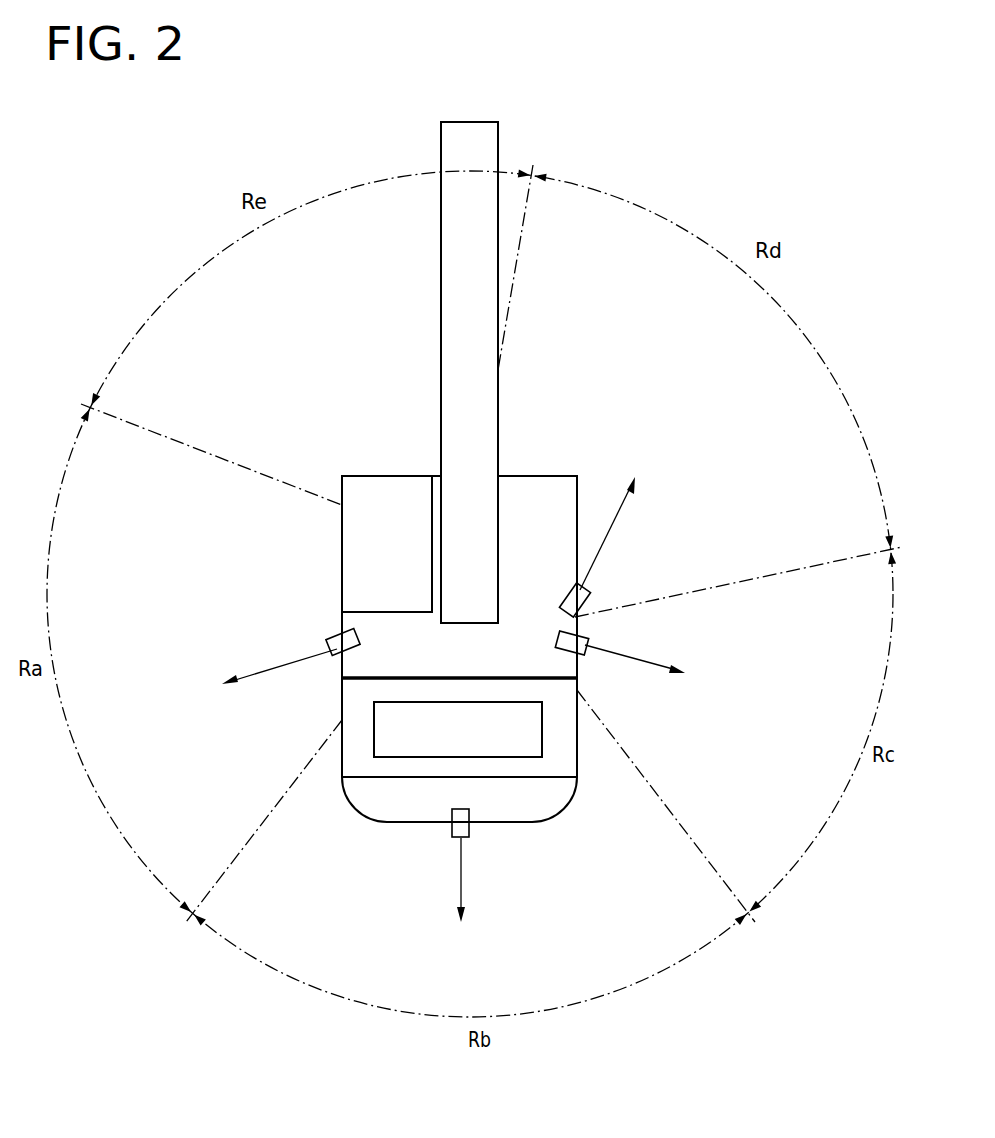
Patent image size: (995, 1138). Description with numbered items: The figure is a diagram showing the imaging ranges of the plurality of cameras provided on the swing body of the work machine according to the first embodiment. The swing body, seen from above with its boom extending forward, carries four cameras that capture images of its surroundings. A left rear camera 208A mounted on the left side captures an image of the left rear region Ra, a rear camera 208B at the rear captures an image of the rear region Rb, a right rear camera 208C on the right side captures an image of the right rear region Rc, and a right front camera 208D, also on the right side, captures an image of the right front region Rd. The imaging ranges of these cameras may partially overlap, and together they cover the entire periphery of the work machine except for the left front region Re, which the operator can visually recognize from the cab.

The left rear camera 208A is at (336, 660).
The rear camera 208B is at (453, 833).
The right rear camera 208C is at (587, 640).
The right front camera 208D is at (587, 596).